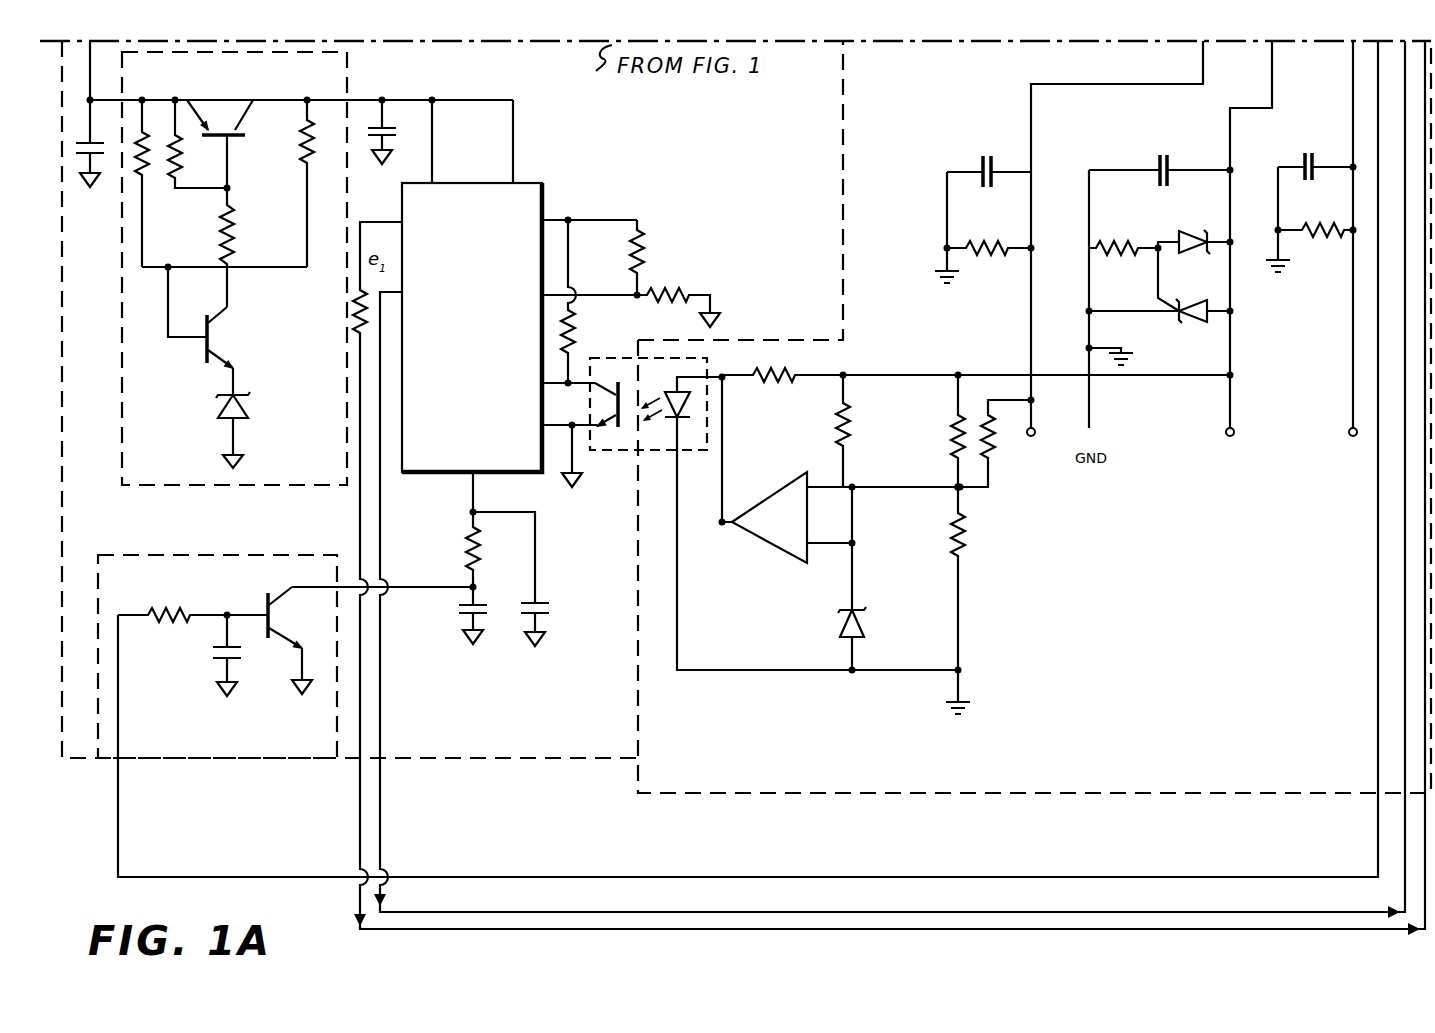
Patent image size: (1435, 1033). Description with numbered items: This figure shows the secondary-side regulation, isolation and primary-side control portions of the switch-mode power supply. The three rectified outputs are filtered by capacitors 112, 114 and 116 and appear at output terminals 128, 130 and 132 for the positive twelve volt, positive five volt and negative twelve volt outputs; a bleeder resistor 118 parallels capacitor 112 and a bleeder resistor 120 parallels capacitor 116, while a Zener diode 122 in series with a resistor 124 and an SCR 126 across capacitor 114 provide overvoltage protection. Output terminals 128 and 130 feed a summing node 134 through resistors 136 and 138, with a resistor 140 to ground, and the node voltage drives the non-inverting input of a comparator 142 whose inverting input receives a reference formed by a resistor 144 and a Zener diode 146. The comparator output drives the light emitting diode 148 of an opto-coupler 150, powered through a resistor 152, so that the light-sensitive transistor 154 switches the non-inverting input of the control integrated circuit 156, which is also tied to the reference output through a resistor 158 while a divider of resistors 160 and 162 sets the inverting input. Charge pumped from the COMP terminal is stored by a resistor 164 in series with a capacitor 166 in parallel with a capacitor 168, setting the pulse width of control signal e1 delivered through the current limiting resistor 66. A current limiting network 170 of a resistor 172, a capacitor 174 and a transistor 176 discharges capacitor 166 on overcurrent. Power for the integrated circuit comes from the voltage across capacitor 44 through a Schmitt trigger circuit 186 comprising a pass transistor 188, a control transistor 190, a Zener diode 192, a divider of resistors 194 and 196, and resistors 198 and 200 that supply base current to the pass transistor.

The capacitor 44 is at (106, 146).
The current limiting resistor 66 is at (356, 320).
The capacitor 112 is at (994, 152).
The capacitor 114 is at (1156, 156).
The capacitor 116 is at (1325, 129).
The bleeder resistor 118 is at (990, 259).
The bleeder resistor 120 is at (1335, 209).
The Zener diode 122 is at (1207, 240).
The resistor 124 is at (1136, 238).
The SCR 126 is at (1202, 333).
The output terminal 128 is at (1035, 431).
The output terminal 130 is at (1227, 430).
The output terminal 132 is at (1350, 430).
The summing node 134 is at (962, 490).
The resistor 136 is at (982, 420).
The resistor 138 is at (950, 433).
The resistor 140 is at (966, 542).
The comparator 142 is at (780, 484).
The resistor 144 is at (838, 426).
The Zener diode 146 is at (838, 610).
The light emitting diode 148 is at (678, 389).
The opto-coupler 150 is at (657, 452).
The resistor 152 is at (783, 364).
The light-sensitive transistor 154 is at (608, 428).
The switch-mode power supply control integrated circuit 156 is at (540, 189).
The resistor 158 is at (578, 346).
The resistor 160 is at (647, 260).
The resistor 162 is at (692, 288).
The resistor 164 is at (468, 549).
The capacitor 166 is at (462, 613).
The capacitor 168 is at (545, 611).
The current limiting network 170 is at (275, 550).
The resistor 172 is at (200, 589).
The capacitor 174 is at (209, 655).
The transistor 176 is at (283, 621).
The Schmitt trigger circuit 186 is at (347, 52).
The pass transistor 188 is at (220, 125).
The control transistor 190 is at (222, 336).
The Zener diode 192 is at (248, 410).
The resistor 194 is at (148, 162).
The resistor 196 is at (300, 148).
The resistor 198 is at (180, 132).
The resistor 200 is at (235, 238).